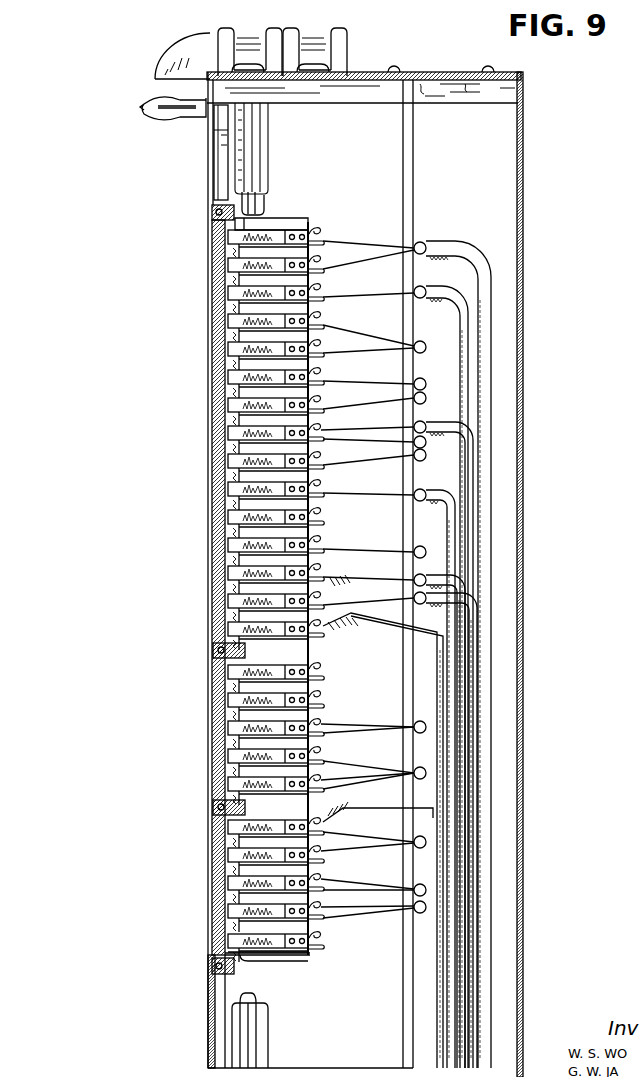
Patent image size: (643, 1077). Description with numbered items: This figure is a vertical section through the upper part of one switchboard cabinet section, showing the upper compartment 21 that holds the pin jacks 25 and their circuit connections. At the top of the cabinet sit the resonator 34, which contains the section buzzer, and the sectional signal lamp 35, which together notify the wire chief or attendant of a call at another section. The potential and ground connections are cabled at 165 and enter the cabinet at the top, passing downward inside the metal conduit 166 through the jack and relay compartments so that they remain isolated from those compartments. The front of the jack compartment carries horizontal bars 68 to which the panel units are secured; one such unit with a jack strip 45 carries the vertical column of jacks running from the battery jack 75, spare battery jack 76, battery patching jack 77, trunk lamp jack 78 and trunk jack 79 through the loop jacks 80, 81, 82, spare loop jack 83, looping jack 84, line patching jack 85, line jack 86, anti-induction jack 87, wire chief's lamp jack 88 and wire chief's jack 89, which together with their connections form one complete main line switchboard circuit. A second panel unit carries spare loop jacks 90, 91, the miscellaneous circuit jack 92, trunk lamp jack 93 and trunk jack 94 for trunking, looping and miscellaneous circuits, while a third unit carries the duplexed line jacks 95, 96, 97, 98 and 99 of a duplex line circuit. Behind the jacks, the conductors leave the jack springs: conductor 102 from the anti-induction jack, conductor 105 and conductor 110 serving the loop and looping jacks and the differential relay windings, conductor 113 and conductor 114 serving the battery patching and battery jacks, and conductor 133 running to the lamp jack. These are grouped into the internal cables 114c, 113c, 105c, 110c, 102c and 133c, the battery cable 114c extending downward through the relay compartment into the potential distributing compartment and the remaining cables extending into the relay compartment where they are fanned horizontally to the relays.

The resonator 34 is at (190, 52).
The sectional signal lamp 35 is at (160, 118).
The metal conduit 166 is at (262, 145).
The potential and ground cable 165 is at (262, 205).
The jack mounting strip 45 is at (294, 226).
The horizontal bars 68 is at (211, 215).
The pin jacks 25 is at (248, 960).
The upper compartment 21 is at (295, 1046).
The battery jack 75 is at (268, 243).
The spare battery jack 76 is at (246, 268).
The battery patching jack 77 is at (235, 299).
The trunk lamp jack 78 is at (254, 329).
The trunk jack 79 is at (273, 355).
The loop jack 80 is at (278, 383).
The loop jack 81 is at (278, 411).
The loop jack 82 is at (278, 439).
The spare loop jack 83 is at (257, 467).
The looping jack 84 is at (267, 495).
The line patching jack 85 is at (203, 523).
The line jack 86 is at (281, 551).
The anti-induction jack 87 is at (243, 579).
The lamp jack 88 is at (234, 607).
The wire chief's jack 89 is at (214, 635).
The spare loop jack 90 is at (212, 678).
The spare loop jack 91 is at (212, 706).
The miscellaneous circuit jack 92 is at (251, 734).
The trunk lamp jack 93 is at (254, 762).
The trunk jack 94 is at (273, 789).
The duplexed line jack 95 is at (255, 825).
The anti-induction jack 96 is at (243, 859).
The set jack 97 is at (284, 889).
The spare set jack 98 is at (262, 917).
The wire chief jack 99 is at (214, 947).
The conductor 114 is at (342, 246).
The battery cable 114c is at (491, 300).
The conductor 113 is at (341, 302).
The internal cable 113c is at (468, 372).
The conductor 105 is at (354, 428).
The internal cable 105c is at (473, 462).
The conductor 110 is at (344, 502).
The internal cable 110c is at (455, 535).
The conductor 102 is at (362, 580).
The internal cable 102c is at (465, 590).
The conductor 133 is at (368, 605).
The internal cable 133c is at (472, 662).